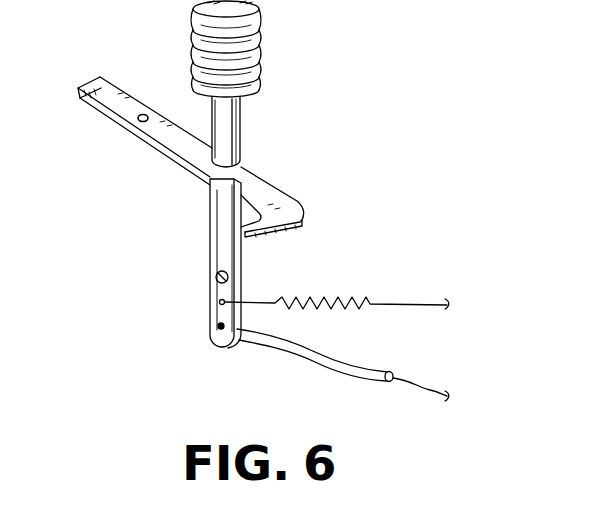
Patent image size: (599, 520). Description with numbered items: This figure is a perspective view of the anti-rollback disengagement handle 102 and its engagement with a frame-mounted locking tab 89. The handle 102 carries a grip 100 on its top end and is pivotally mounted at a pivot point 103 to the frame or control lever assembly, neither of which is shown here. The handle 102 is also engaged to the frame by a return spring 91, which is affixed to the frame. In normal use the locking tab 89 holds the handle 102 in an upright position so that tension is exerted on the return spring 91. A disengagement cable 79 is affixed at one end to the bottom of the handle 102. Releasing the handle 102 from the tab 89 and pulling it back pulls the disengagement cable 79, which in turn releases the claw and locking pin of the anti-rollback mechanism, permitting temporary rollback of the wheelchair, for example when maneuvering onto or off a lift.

The grip 100 is at (260, 42).
The anti-rollback disengagement handle 102 is at (228, 133).
The locking tab 89 is at (195, 155).
The pivot point 103 is at (232, 274).
The return spring 91 is at (422, 307).
The disengagement cable 79 is at (327, 362).